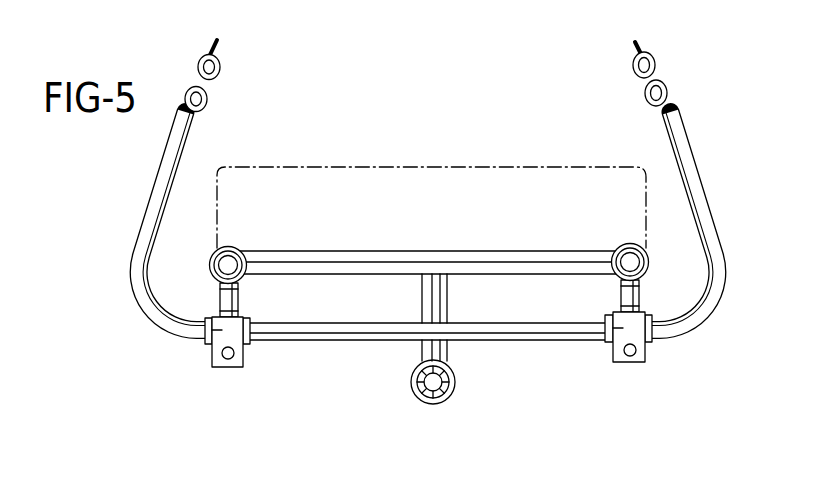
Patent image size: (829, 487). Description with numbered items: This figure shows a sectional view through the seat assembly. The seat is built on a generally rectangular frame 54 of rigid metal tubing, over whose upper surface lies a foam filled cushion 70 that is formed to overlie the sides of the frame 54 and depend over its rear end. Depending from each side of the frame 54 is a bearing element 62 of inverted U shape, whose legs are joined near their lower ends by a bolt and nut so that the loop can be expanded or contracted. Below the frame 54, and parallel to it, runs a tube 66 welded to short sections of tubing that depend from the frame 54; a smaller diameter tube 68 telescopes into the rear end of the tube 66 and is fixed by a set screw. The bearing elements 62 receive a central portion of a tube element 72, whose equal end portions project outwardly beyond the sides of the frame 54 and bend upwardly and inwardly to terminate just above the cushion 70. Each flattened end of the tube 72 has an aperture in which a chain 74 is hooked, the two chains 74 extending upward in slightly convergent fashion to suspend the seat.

The frame 54 is at (392, 251).
The bearing element 62 is at (218, 364).
The tube 66 is at (455, 381).
The smaller diameter tube 68 is at (412, 382).
The foam filled cushion 70 is at (430, 166).
The tube element 72 is at (327, 341).
The chain 74 is at (220, 68).